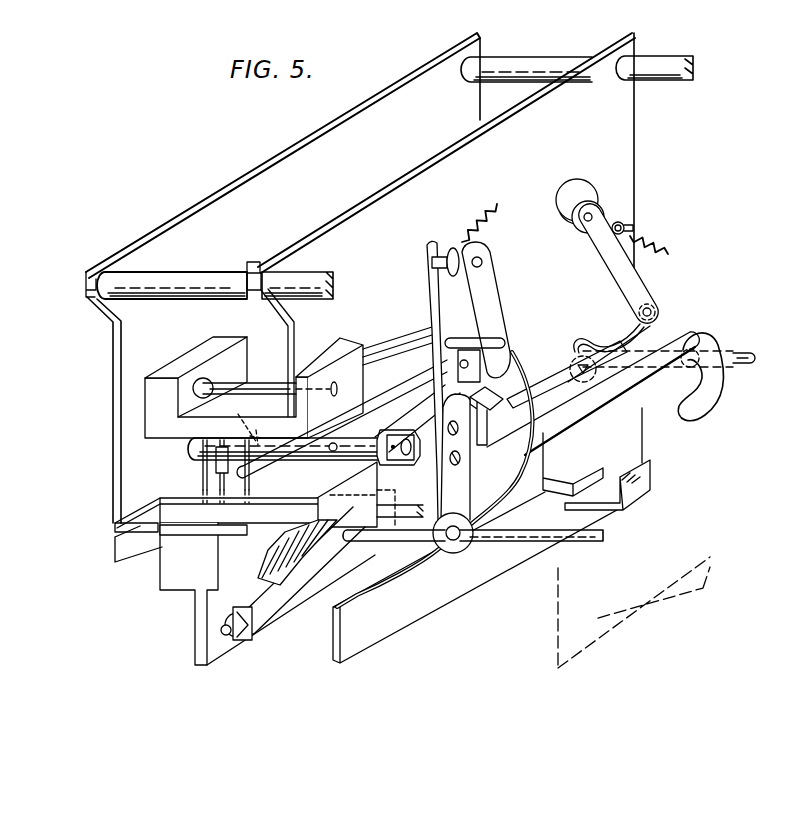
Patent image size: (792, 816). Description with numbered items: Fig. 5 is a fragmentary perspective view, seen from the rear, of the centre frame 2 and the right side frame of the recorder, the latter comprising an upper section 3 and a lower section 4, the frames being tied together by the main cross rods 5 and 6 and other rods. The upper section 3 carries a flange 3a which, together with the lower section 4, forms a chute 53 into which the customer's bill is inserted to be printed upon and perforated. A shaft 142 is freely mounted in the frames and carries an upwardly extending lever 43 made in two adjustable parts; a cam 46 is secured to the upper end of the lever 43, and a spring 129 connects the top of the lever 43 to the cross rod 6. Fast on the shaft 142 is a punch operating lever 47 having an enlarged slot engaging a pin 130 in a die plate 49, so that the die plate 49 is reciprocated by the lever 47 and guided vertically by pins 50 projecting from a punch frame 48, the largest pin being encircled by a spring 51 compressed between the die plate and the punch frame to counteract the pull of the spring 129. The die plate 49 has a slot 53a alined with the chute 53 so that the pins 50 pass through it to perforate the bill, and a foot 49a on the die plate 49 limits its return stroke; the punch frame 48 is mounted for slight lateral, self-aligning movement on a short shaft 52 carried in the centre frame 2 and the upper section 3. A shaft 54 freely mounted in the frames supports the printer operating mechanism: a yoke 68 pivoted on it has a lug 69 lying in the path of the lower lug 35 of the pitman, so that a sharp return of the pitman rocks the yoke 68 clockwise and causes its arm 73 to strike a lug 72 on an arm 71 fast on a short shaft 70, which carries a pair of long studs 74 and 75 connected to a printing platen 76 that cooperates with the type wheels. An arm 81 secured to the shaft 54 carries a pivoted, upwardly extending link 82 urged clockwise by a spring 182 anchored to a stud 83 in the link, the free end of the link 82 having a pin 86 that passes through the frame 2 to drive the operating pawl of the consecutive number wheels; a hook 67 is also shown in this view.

The centre frame 2 is at (624, 133).
The upper section 3 is at (280, 154).
The flange 3a is at (114, 510).
The lower section 4 is at (127, 548).
The main cross rod 5 is at (181, 277).
The main cross rod 6 is at (527, 78).
The lower lug 35 is at (650, 474).
The lever 43 is at (428, 316).
The cam 46 is at (488, 275).
The punch operating lever 47 is at (275, 600).
The punch frame 48 is at (195, 357).
The die plate 49 is at (168, 570).
The foot 49a is at (392, 520).
The pins 50 is at (222, 478).
The spring 51 is at (250, 471).
The short shaft 52 is at (268, 387).
The chute 53 is at (118, 527).
The slot 53a is at (188, 533).
The shaft 54 is at (742, 353).
The hook 67 is at (720, 399).
The yoke 68 is at (604, 420).
The lug 69 is at (583, 474).
The short shaft 70 is at (310, 458).
The arm 71 is at (421, 463).
The lug 72 is at (548, 393).
The arm 73 is at (573, 374).
The long stud 74 is at (432, 404).
The long stud 75 is at (245, 420).
The printing platen 76 is at (417, 377).
The arm 81 is at (620, 313).
The link 82 is at (642, 286).
The stud 83 is at (640, 228).
The pin 86 is at (565, 200).
The spring 129 is at (469, 220).
The pin 130 is at (250, 634).
The shaft 142 is at (572, 546).
The spring 182 is at (668, 252).